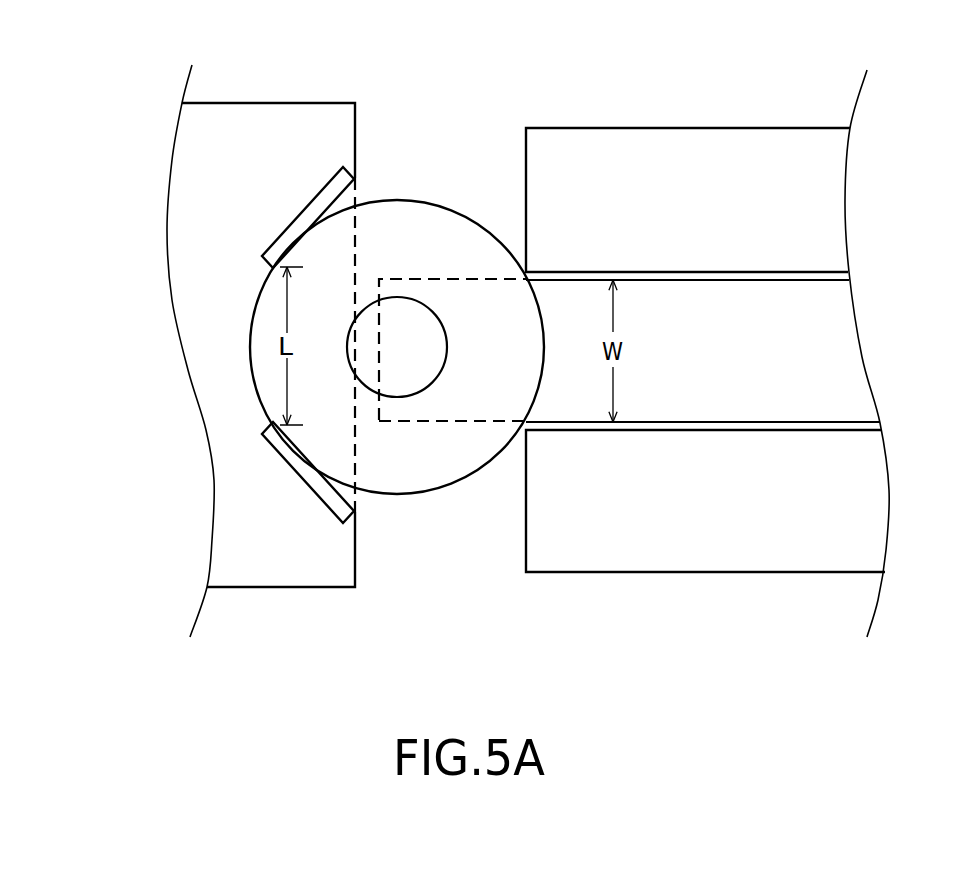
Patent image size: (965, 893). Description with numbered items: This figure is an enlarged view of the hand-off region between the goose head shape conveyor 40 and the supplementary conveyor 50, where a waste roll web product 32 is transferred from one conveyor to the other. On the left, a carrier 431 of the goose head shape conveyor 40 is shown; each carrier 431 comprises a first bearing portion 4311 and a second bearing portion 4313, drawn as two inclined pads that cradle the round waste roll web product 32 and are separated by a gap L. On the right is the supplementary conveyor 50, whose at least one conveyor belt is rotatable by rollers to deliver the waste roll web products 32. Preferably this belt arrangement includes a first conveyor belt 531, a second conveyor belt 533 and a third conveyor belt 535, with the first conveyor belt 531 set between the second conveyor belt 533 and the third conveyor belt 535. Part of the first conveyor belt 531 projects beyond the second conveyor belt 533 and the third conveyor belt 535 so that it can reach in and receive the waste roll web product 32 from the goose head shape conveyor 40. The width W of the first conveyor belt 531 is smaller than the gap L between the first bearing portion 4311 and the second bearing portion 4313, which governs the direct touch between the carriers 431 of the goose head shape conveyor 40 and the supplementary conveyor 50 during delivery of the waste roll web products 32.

The goose head shape conveyor 40 is at (286, 76).
The carrier 431 is at (81, 308).
The first bearing portion 4311 is at (263, 255).
The second bearing portion 4313 is at (263, 433).
The waste roll web product 32 is at (409, 198).
The supplementary conveyor 50 is at (710, 88).
The second conveyor belt 533 is at (838, 189).
The first conveyor belt 531 is at (860, 361).
The third conveyor belt 535 is at (880, 513).